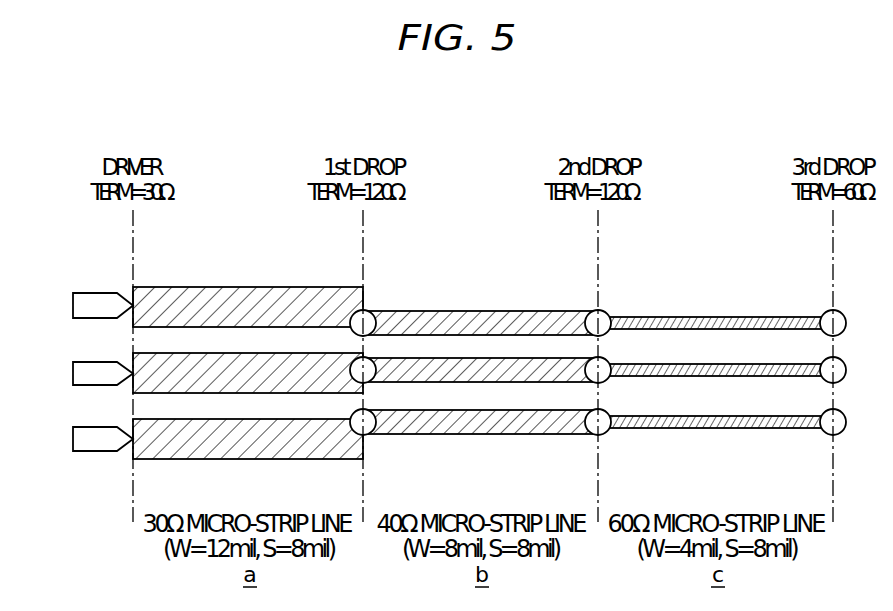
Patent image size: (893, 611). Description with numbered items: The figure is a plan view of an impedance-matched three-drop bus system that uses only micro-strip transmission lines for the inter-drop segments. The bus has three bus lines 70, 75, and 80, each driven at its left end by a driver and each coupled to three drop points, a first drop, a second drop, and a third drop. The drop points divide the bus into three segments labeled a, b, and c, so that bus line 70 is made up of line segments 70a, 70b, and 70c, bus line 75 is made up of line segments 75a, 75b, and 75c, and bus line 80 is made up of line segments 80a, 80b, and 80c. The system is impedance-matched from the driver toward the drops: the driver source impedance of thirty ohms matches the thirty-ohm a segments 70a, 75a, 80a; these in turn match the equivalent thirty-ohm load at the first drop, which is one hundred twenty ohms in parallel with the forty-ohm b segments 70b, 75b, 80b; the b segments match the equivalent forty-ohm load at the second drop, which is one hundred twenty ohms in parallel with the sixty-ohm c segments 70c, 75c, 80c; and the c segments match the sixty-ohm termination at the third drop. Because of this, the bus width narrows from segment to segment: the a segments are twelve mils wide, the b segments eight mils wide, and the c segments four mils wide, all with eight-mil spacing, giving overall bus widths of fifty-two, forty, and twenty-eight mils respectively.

The bus line 70 is at (73, 305).
The bus line 75 is at (73, 373).
The bus line 80 is at (73, 439).
The line segment 70a is at (234, 321).
The line segment 75a is at (234, 387).
The line segment 80a is at (234, 452).
The line segment 70b is at (465, 311).
The line segment 75b is at (525, 383).
The line segment 80b is at (465, 435).
The line segment 70c is at (668, 317).
The line segment 75c is at (758, 364).
The line segment 80c is at (700, 428).